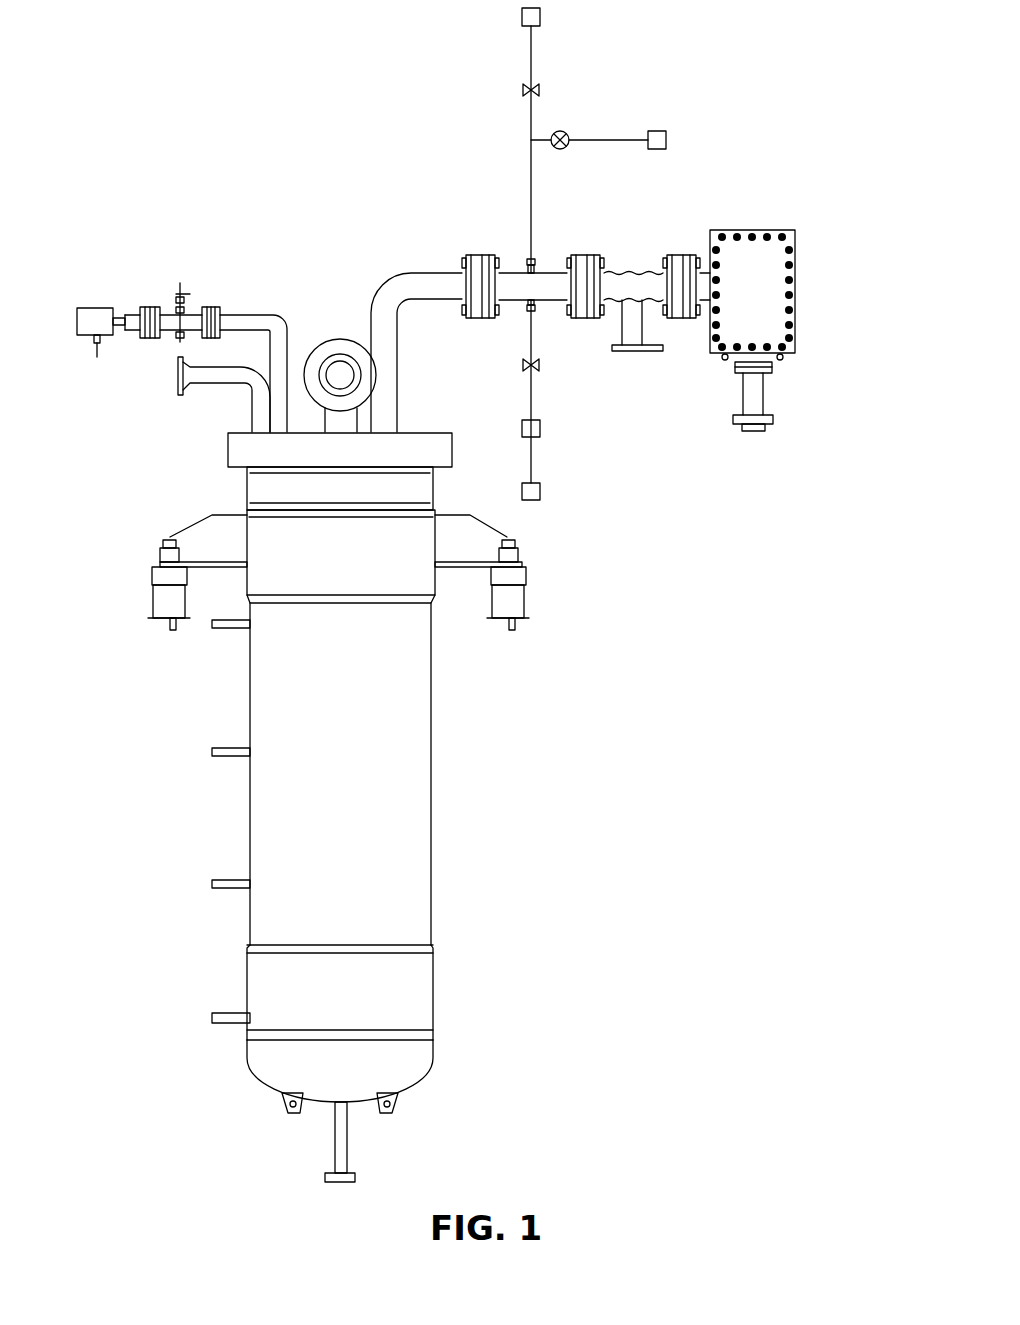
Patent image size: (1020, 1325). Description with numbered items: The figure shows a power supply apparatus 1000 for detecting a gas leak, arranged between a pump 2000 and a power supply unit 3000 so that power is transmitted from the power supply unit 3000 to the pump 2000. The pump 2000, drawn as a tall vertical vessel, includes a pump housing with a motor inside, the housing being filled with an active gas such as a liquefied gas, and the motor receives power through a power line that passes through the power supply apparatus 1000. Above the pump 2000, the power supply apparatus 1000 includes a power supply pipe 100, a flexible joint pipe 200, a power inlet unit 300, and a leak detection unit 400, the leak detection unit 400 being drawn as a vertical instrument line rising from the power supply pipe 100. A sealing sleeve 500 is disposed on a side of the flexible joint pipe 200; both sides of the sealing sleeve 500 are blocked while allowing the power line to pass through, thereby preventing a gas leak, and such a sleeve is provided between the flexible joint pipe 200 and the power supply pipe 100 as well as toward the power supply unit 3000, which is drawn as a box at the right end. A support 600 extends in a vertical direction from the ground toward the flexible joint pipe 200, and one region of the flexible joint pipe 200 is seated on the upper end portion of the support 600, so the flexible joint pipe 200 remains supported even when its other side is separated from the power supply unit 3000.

The power supply pipe 100 is at (518, 300).
The flexible joint pipe 200 is at (633, 273).
The power inlet unit 300 is at (470, 255).
The leak detection unit 400 is at (511, 123).
The sealing sleeve 500 is at (594, 256).
The support 600 is at (640, 352).
The power supply apparatus 1000 is at (644, 448).
The pump 2000 is at (432, 808).
The power supply unit 3000 is at (750, 230).